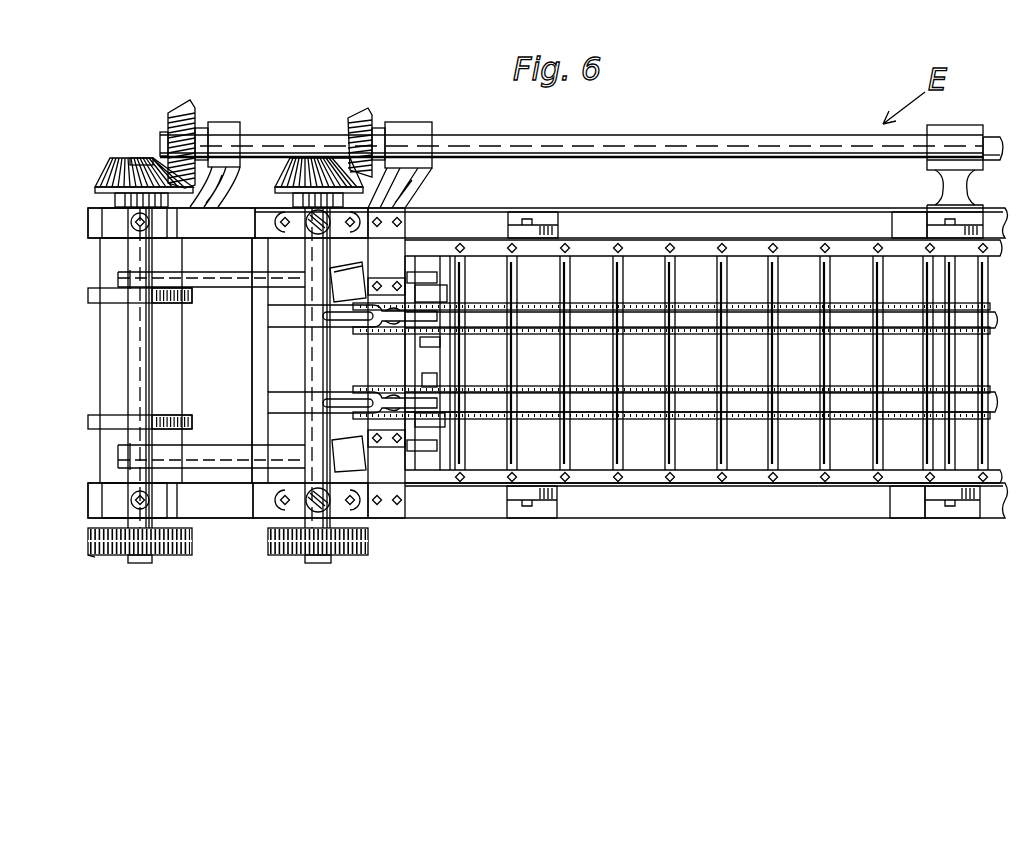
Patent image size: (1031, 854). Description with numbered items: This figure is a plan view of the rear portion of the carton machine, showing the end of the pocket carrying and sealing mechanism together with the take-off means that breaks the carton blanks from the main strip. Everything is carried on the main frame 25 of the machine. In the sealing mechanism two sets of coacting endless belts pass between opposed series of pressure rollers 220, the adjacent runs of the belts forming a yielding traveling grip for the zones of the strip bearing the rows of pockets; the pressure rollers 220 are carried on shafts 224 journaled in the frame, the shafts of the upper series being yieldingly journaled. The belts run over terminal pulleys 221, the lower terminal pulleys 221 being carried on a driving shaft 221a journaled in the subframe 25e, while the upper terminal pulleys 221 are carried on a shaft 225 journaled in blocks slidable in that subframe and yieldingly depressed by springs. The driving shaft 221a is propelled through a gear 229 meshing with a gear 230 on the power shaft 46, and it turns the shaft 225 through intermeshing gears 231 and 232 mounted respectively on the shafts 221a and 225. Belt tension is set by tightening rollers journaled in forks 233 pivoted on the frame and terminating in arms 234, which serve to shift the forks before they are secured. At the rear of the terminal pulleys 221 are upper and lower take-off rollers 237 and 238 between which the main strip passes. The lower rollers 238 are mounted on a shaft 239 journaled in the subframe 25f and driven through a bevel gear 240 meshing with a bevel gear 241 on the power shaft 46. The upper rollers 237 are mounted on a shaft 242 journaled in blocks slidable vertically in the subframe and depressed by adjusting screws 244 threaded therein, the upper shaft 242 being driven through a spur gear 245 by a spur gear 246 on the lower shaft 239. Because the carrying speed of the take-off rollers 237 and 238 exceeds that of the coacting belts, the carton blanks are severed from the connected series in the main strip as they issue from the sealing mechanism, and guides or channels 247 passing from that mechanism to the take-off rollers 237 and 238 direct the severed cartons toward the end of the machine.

The power shaft 46 is at (583, 140).
The bevel gear 241 is at (174, 106).
The bevel gear 240 is at (107, 173).
The gear 230 is at (362, 108).
The gear 229 is at (277, 173).
The main frame 25 is at (833, 505).
The subframe 25e is at (267, 507).
The subframe 25f is at (105, 498).
The adjusting screws 244 is at (130, 222).
The shaft 242 is at (137, 257).
The upper take-off rollers 237 is at (97, 418).
The lower take-off rollers 238 is at (160, 303).
The guides or channels 247 is at (225, 288).
The gear 231 is at (268, 555).
The shaft 225 is at (312, 432).
The terminal pulleys 221 is at (278, 328).
The arms 234 is at (340, 320).
The forks 233 is at (422, 377).
The shafts 224 is at (713, 273).
The pressure rollers 220 is at (762, 420).
The spur gear 245 is at (87, 538).
The spur gear 246 is at (88, 558).
The shaft 239 is at (137, 562).
The gear 232 is at (370, 535).
The driving shaft 221a is at (317, 562).